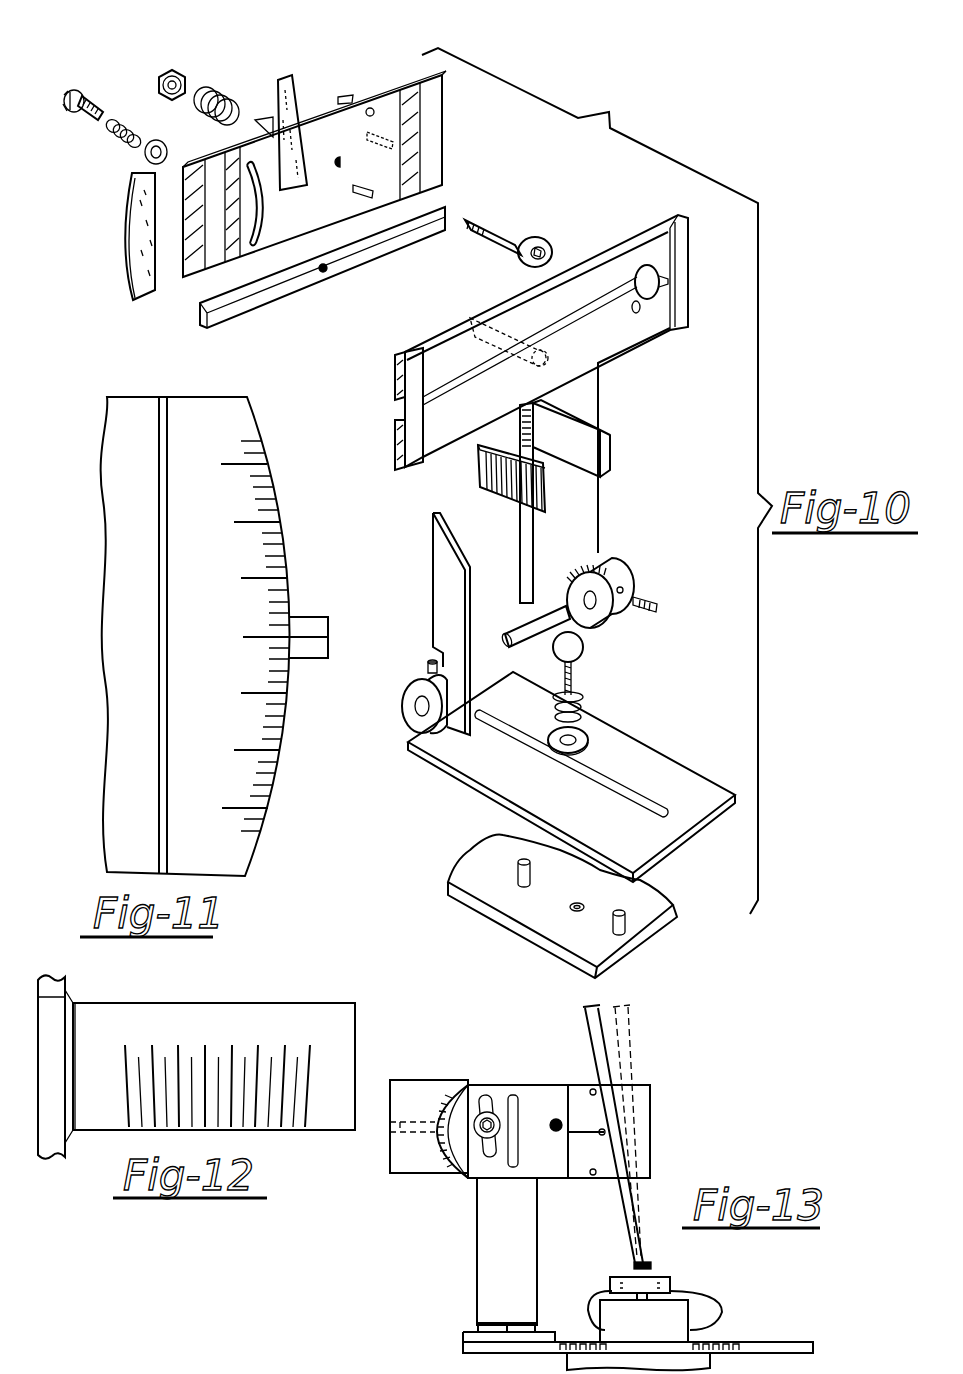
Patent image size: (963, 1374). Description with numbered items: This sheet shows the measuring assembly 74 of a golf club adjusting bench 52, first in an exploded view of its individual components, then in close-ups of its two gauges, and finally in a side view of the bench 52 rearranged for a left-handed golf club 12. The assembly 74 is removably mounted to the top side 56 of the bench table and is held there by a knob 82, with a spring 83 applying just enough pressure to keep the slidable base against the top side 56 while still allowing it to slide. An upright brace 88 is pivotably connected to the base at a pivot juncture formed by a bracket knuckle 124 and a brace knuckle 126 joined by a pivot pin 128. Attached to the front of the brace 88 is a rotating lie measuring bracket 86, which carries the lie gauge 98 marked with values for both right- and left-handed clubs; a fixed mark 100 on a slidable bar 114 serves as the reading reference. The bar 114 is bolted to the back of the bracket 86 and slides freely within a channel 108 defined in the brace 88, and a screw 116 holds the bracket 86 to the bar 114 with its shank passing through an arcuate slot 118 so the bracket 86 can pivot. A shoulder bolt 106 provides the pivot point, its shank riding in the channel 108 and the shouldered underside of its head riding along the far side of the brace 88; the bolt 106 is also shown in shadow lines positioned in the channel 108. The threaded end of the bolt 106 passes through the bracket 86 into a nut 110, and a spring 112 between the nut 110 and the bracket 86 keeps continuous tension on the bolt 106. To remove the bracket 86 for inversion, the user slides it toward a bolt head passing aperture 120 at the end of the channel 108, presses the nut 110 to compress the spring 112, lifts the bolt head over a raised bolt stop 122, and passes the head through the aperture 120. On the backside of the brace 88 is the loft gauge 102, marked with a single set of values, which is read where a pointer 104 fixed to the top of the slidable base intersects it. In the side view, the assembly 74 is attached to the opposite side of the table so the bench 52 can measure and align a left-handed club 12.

In FIG. 13, the golf club 12 is at (590, 1040).
In FIG. 13, the adjusting bench 52 is at (733, 1340).
In FIG. 10, the top side 56 is at (490, 910).
In FIG. 10, the measuring assembly 74 is at (629, 446).
In FIG. 13, the measuring assembly 74 is at (487, 1217).
In FIG. 10, the knob 82 is at (582, 647).
In FIG. 10, the spring 83 is at (588, 694).
In FIG. 10, the lie measuring bracket 86 is at (385, 90).
In FIG. 13, the lie measuring bracket 86 is at (423, 1097).
In FIG. 10, the upright brace 88 is at (633, 233).
In FIG. 10, the lie gauge 98 is at (122, 250).
In FIG. 11, the lie gauge 98 is at (255, 437).
In FIG. 11, the fixed mark 100 is at (328, 627).
In FIG. 10, the loft gauge 102 is at (495, 487).
In FIG. 12, the loft gauge 102 is at (228, 1008).
In FIG. 10, the pointer 104 is at (443, 560).
In FIG. 10, the shoulder bolt 106 is at (515, 237).
In FIG. 10, the channel 108 is at (400, 413).
In FIG. 10, the nut 110 is at (176, 72).
In FIG. 10, the spring 112 is at (224, 95).
In FIG. 10, the slidable bar 114 is at (270, 288).
In FIG. 10, the screw 116 is at (70, 90).
In FIG. 10, the arcuate slot 118 is at (243, 255).
In FIG. 10, the bolt head passing aperture 120 is at (652, 292).
In FIG. 10, the raised bolt stop 122 is at (640, 312).
In FIG. 10, the bracket knuckle 124 is at (625, 566).
In FIG. 10, the brace knuckle 126 is at (410, 706).
In FIG. 10, the pivot pin 128 is at (508, 633).